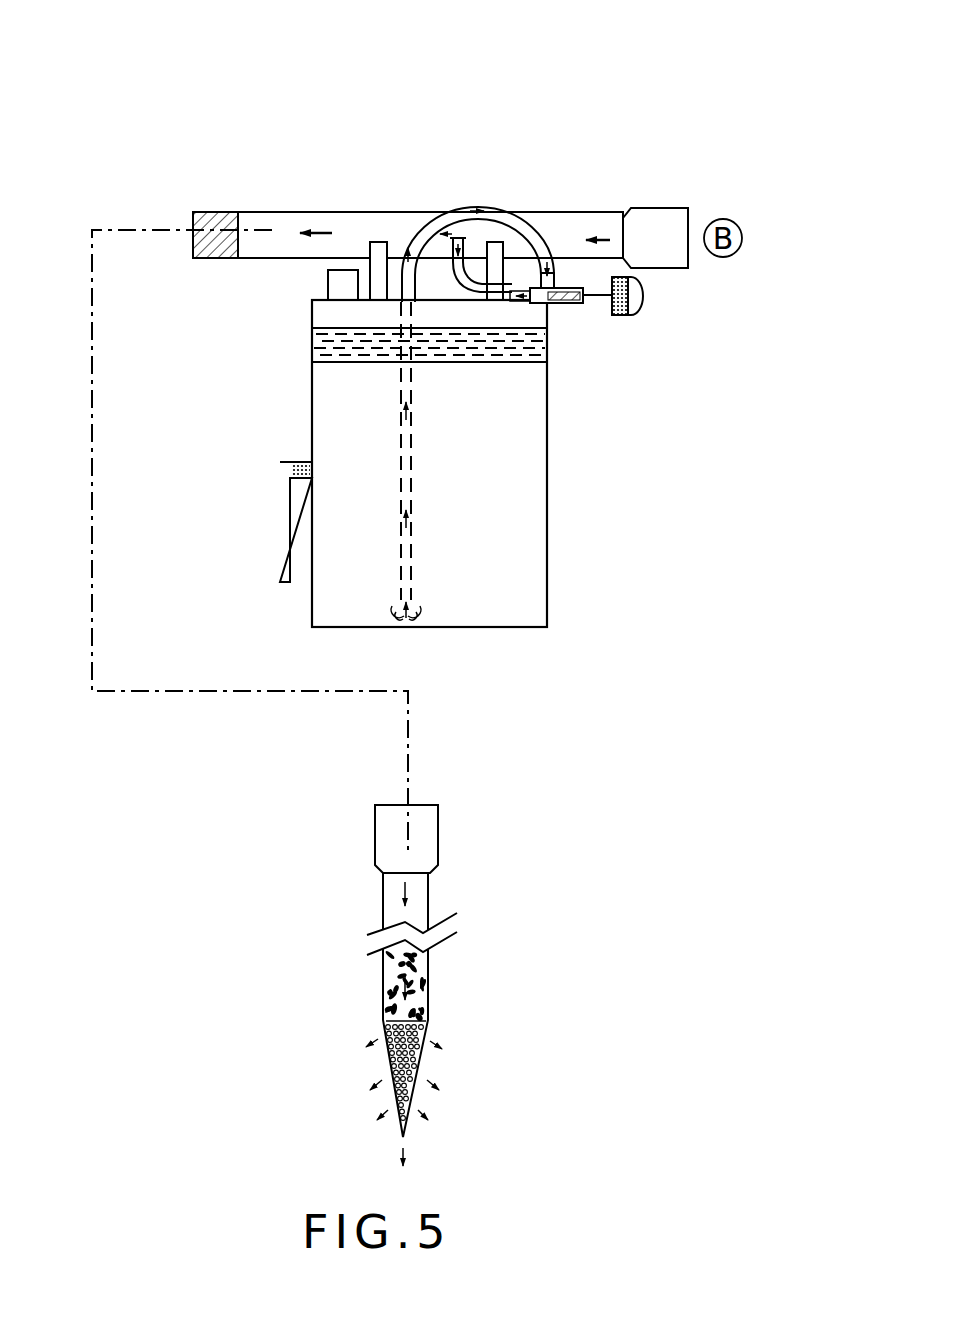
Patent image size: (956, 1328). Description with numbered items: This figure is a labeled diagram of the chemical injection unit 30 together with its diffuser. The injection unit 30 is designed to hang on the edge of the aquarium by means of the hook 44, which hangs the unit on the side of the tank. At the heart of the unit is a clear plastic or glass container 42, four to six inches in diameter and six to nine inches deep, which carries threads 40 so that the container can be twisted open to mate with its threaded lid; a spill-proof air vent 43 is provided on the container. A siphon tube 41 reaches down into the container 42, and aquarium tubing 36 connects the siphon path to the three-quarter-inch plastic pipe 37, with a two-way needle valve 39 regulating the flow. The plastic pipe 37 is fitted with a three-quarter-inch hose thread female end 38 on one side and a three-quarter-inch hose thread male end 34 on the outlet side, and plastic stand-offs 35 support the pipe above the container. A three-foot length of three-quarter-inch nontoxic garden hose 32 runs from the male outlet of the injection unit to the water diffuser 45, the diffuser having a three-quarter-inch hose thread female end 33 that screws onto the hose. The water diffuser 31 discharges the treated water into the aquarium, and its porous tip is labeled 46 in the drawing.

The chemical injection unit 30 is at (385, 210).
The water diffuser 31 is at (402, 1063).
The ¾" non-toxic garden hose 32 is at (428, 902).
The ¾" hose thread female end 33 is at (393, 815).
The ¾" hose thread male end 34 is at (202, 212).
The plastic stand-offs 35 is at (378, 252).
The aquarium tubing 36 is at (468, 236).
The ¾" plastic pipe 37 is at (537, 210).
The ¾" hose thread female end 38 is at (643, 208).
The two way needle valve 39 is at (553, 303).
The threads 40 is at (515, 355).
The siphon tube 41 is at (410, 435).
The clear plastic or glass container 42 is at (484, 570).
The spill-proof air vent 43 is at (333, 275).
The hook 44 is at (296, 462).
The water diffuser 45 is at (438, 817).
The packing material 46 is at (420, 965).